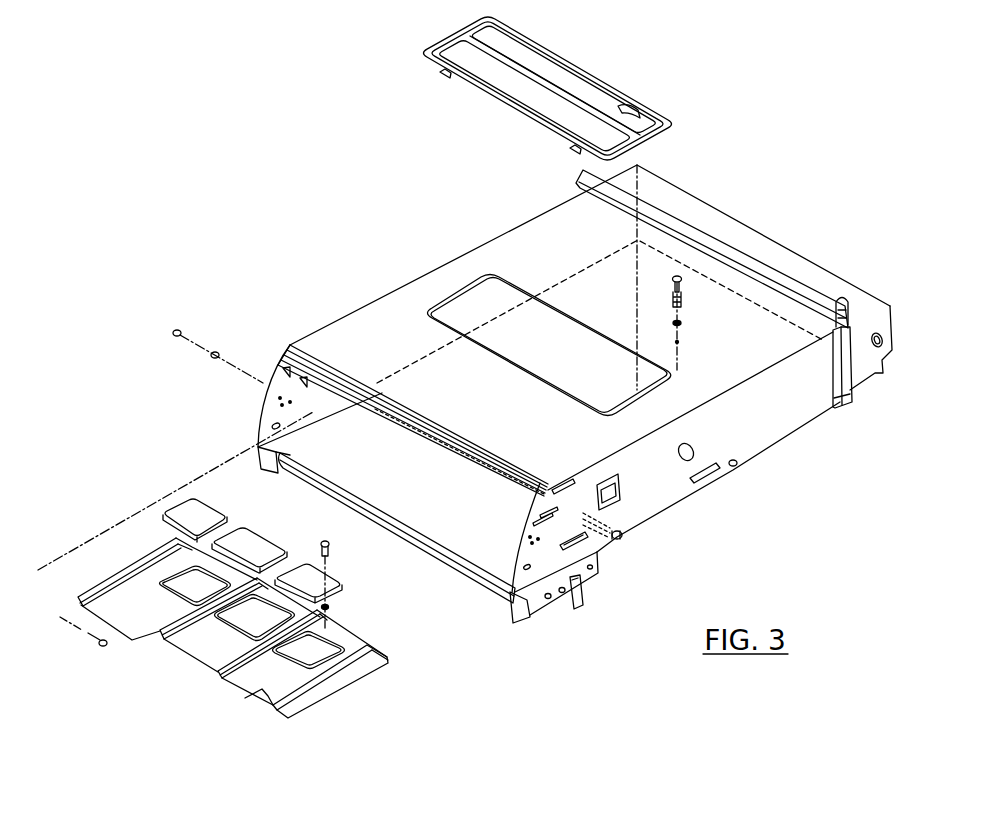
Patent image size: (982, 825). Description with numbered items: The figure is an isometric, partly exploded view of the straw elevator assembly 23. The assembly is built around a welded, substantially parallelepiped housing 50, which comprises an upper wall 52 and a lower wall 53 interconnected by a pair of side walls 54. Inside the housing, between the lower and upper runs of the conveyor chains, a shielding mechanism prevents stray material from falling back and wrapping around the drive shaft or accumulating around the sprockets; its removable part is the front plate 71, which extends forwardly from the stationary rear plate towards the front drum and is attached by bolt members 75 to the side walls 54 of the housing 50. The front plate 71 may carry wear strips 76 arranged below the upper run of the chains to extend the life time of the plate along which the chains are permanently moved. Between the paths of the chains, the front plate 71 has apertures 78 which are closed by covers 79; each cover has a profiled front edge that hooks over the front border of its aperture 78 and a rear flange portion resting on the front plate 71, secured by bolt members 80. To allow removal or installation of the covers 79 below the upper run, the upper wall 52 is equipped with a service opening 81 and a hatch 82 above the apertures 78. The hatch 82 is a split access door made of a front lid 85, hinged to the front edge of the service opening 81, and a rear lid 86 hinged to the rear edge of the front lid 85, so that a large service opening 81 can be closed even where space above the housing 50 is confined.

The straw elevator assembly 23 is at (284, 186).
The housing 50 is at (820, 452).
The upper wall 52 is at (422, 278).
The lower wall 53 is at (332, 475).
The side walls 54 is at (757, 448).
The front plate 71 is at (345, 677).
The bolt members 75 is at (92, 642).
The wear strips 76 is at (130, 593).
The apertures 78 is at (182, 595).
The covers 79 is at (210, 513).
The bolt members 80 is at (332, 547).
The service opening 81 is at (526, 335).
The hatch 82 is at (472, 77).
The front lid 85 is at (513, 108).
The rear lid 86 is at (602, 80).